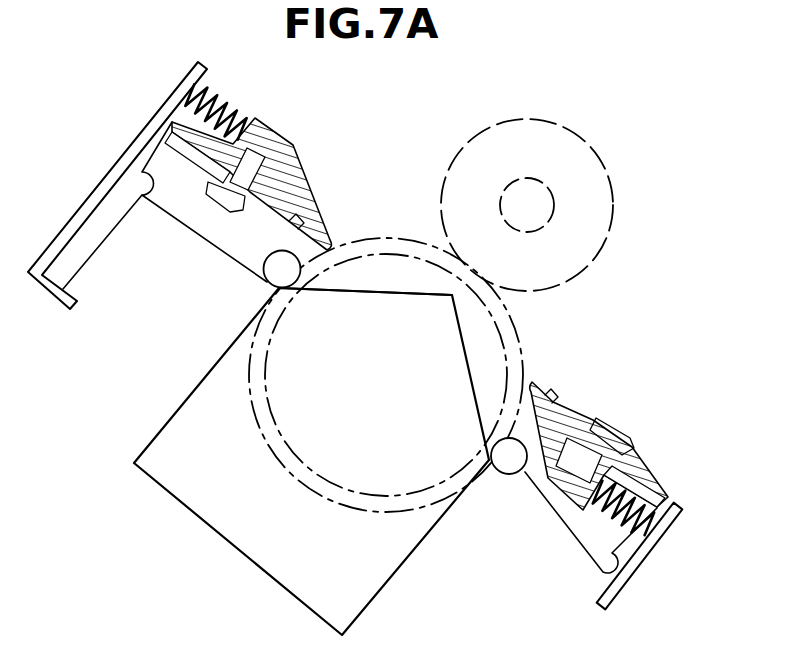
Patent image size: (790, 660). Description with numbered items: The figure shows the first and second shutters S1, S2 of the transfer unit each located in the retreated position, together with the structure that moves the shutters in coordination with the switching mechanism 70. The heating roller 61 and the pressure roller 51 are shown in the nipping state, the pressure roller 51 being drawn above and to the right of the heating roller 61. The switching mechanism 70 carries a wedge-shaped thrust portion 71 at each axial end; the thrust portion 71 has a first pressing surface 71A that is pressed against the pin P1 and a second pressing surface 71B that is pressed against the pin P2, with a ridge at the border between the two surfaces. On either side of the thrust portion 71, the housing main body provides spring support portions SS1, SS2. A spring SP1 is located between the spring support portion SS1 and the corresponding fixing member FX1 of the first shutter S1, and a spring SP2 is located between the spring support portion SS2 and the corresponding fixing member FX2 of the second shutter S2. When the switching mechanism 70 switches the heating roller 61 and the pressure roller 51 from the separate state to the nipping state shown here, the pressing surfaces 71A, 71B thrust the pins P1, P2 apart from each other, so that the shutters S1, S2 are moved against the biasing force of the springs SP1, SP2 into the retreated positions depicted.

The switching mechanism 70 is at (177, 499).
The heating roller 61 is at (391, 513).
The thrust portion 71 is at (410, 290).
The first pressing surface 71A is at (378, 291).
The second pressing surface 71B is at (465, 338).
The pressure roller 51 is at (613, 190).
The spring support portion SS1 is at (160, 112).
The spring SP1 is at (222, 100).
The fixing member FX1 is at (291, 144).
The first shutter S1 is at (258, 214).
The pin P1 is at (276, 271).
The spring support portion SS2 is at (662, 542).
The spring SP2 is at (640, 490).
The fixing member FX2 is at (560, 490).
The second shutter S2 is at (583, 413).
The pin P2 is at (503, 468).